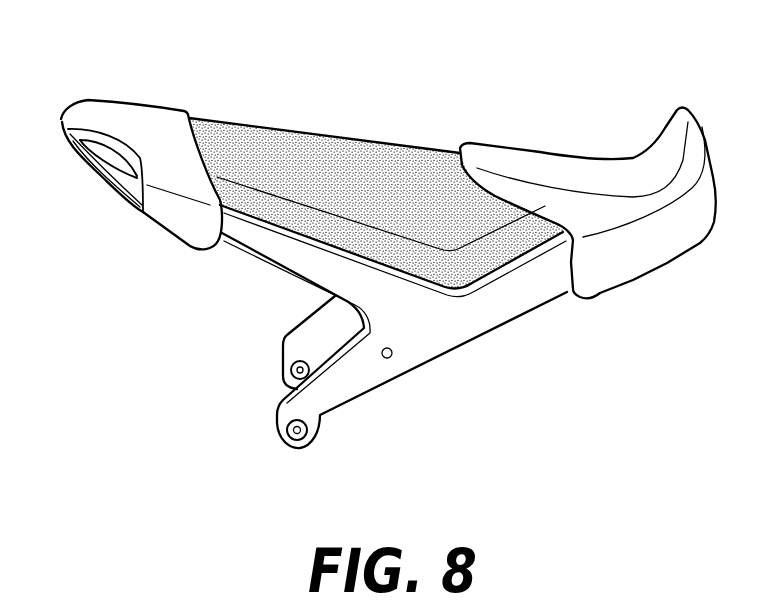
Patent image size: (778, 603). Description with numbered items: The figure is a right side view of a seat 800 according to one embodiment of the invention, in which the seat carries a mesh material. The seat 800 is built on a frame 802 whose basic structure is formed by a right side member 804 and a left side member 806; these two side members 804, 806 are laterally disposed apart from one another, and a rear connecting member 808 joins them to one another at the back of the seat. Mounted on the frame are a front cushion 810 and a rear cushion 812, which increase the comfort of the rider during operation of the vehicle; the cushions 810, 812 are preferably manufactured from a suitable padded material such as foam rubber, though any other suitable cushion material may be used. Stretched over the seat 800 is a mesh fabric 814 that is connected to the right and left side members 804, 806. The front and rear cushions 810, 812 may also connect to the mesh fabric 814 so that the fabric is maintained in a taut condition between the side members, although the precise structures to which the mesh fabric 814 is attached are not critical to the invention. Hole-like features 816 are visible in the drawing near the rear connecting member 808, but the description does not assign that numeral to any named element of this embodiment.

The seat 800 is at (378, 253).
The frame 802 is at (558, 312).
The right side member 804 is at (383, 386).
The left side member 806 is at (290, 333).
The rear connecting member 808 is at (93, 173).
The front cushion 810 is at (573, 165).
The rear cushion 812 is at (136, 113).
The mesh fabric 814 is at (347, 140).
The mounting holes 816 is at (296, 371).